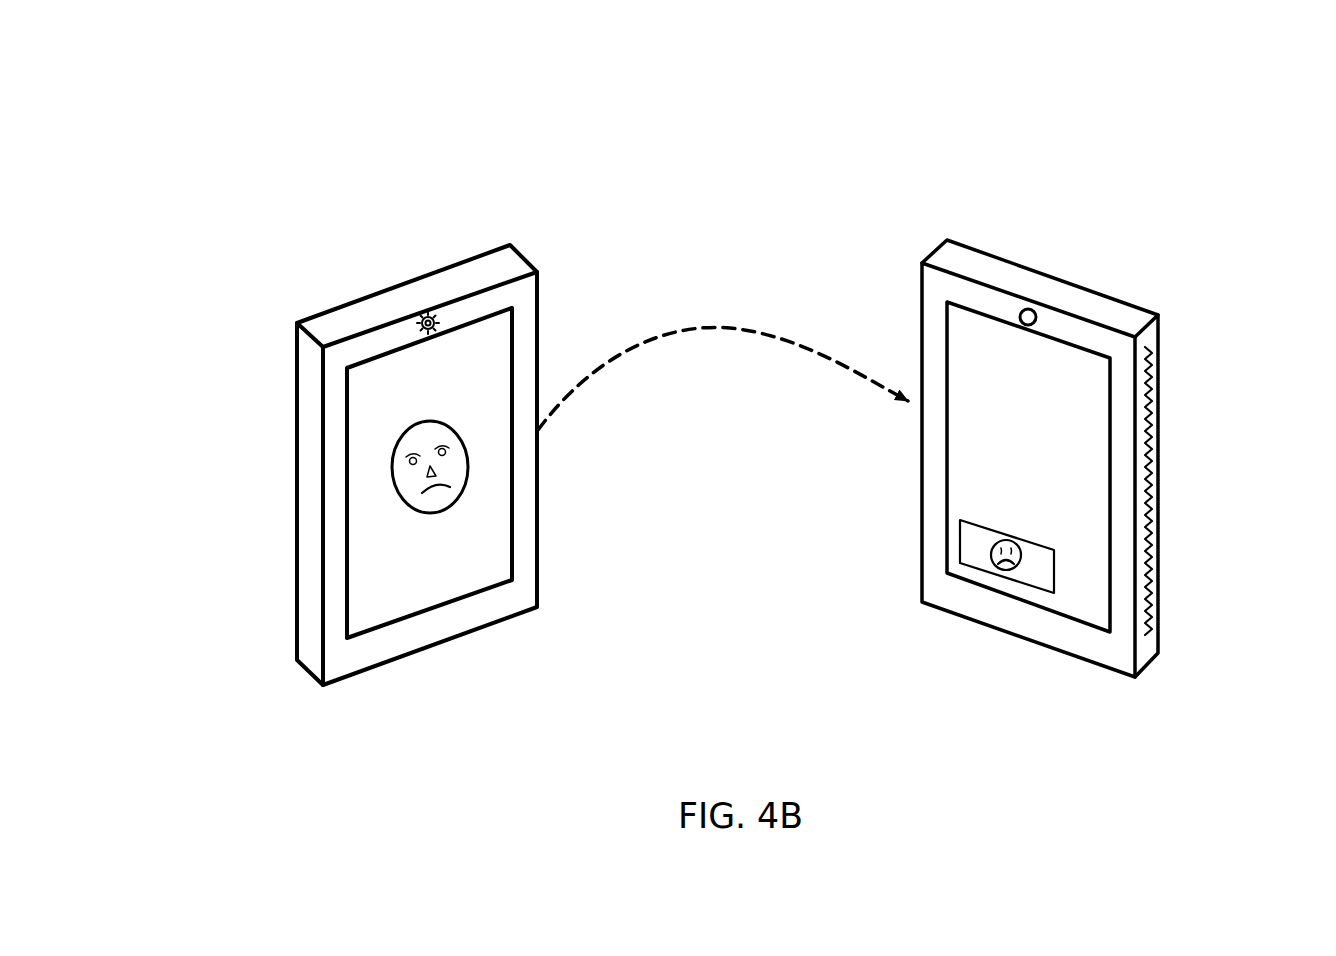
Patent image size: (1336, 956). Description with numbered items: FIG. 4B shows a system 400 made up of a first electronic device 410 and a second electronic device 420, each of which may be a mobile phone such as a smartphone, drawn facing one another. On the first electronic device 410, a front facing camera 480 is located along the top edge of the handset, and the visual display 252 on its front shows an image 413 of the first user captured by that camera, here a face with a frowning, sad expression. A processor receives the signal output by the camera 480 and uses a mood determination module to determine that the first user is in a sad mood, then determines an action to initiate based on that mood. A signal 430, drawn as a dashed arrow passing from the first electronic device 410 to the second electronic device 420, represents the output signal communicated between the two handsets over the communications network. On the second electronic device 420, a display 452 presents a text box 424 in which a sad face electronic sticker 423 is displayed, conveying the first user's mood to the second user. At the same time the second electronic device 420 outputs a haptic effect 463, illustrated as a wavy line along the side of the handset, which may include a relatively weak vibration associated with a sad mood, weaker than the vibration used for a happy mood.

The system 400 is at (210, 153).
The first electronic device 410 is at (303, 296).
The visual display 252 is at (355, 458).
The image 413 is at (393, 505).
The front facing camera 480 is at (427, 318).
The communication transmission 430 is at (728, 330).
The second electronic device 420 is at (1170, 286).
The display 452 is at (963, 360).
The text box 424 is at (962, 532).
The sad face electronic sticker 423 is at (992, 568).
The haptic effect 463 is at (1160, 506).